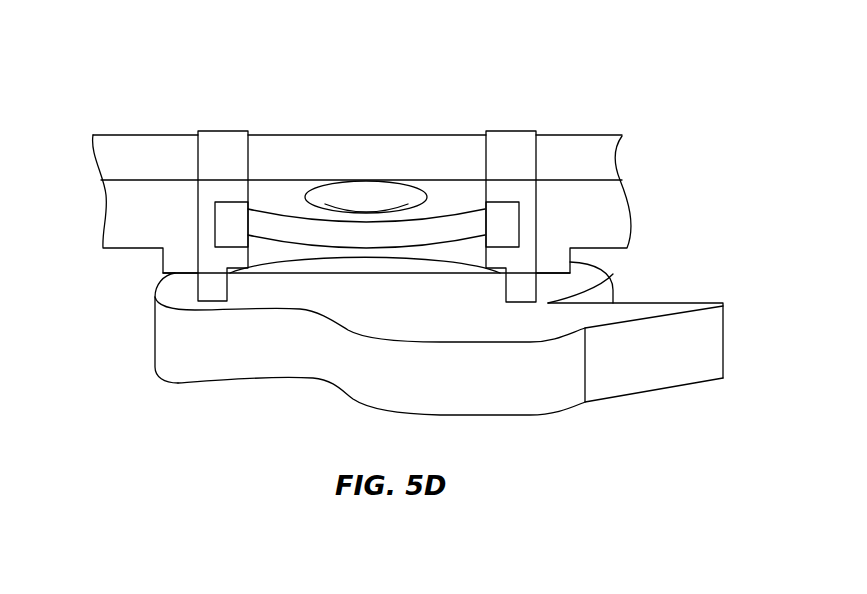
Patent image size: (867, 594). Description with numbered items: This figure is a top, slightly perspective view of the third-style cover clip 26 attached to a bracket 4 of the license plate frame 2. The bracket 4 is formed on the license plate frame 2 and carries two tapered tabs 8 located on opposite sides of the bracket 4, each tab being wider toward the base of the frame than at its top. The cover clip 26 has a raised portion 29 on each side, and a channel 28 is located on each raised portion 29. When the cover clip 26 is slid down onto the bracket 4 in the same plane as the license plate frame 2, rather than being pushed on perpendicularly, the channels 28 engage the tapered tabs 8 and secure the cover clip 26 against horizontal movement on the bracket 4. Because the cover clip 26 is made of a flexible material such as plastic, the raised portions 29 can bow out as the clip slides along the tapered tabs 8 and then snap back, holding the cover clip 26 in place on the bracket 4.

The license plate frame 2 is at (150, 133).
The bracket 4 is at (565, 100).
The tabs 8 is at (235, 218).
The cover clip 26 is at (693, 303).
The channels 28 is at (215, 238).
The raised portions 29 is at (213, 218).